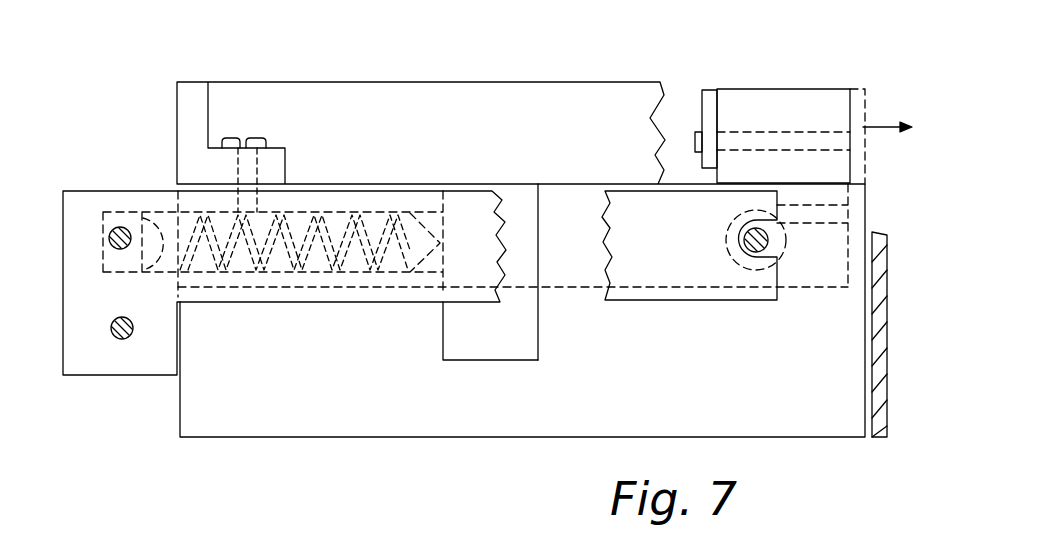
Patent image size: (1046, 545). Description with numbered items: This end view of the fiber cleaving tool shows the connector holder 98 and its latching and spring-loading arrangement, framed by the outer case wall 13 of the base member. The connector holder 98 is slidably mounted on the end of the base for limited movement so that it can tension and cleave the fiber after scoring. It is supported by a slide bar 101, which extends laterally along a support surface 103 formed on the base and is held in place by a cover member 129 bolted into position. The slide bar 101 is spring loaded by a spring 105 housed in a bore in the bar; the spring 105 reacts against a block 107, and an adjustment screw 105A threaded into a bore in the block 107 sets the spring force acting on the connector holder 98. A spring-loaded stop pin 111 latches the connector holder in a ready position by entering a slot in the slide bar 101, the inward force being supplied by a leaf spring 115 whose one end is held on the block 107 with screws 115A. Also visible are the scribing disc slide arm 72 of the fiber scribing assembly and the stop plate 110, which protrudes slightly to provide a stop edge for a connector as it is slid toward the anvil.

The outer case wall 13 is at (887, 247).
The scribing disc slide arm 72 is at (498, 347).
The connector holder 98 is at (752, 84).
The slide bar 101 is at (520, 202).
The support surface 103 is at (823, 282).
The spring 105 is at (318, 215).
The adjustment screw 105A is at (160, 207).
The block 107 is at (117, 217).
The stop plate 110 is at (698, 100).
The stop pin 111 is at (777, 240).
The leaf spring 115 is at (645, 262).
The screws 115A is at (112, 328).
The cover member 129 is at (423, 93).